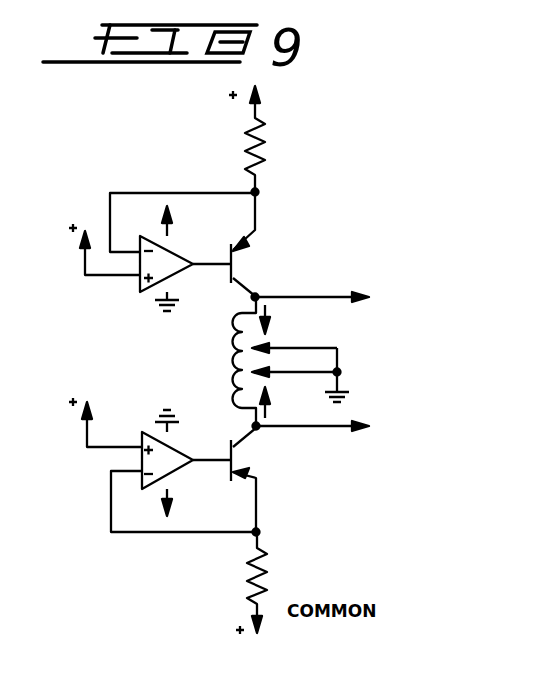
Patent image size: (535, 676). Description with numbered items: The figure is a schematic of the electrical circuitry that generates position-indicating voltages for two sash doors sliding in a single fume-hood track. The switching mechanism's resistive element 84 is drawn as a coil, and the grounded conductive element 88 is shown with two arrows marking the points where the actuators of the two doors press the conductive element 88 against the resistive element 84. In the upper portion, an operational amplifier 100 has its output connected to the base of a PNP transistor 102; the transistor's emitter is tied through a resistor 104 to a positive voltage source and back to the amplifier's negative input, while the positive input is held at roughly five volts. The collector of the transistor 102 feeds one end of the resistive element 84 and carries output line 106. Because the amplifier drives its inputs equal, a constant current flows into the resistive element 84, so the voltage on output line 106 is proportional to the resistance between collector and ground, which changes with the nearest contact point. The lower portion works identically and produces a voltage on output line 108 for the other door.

The resistive element 84 is at (238, 378).
The conductive element 88 is at (313, 348).
The operational amplifier 100 is at (172, 251).
The PNP transistor 102 is at (248, 280).
The resistor 104 is at (262, 140).
The output line 106 is at (312, 296).
The output line 108 is at (305, 428).